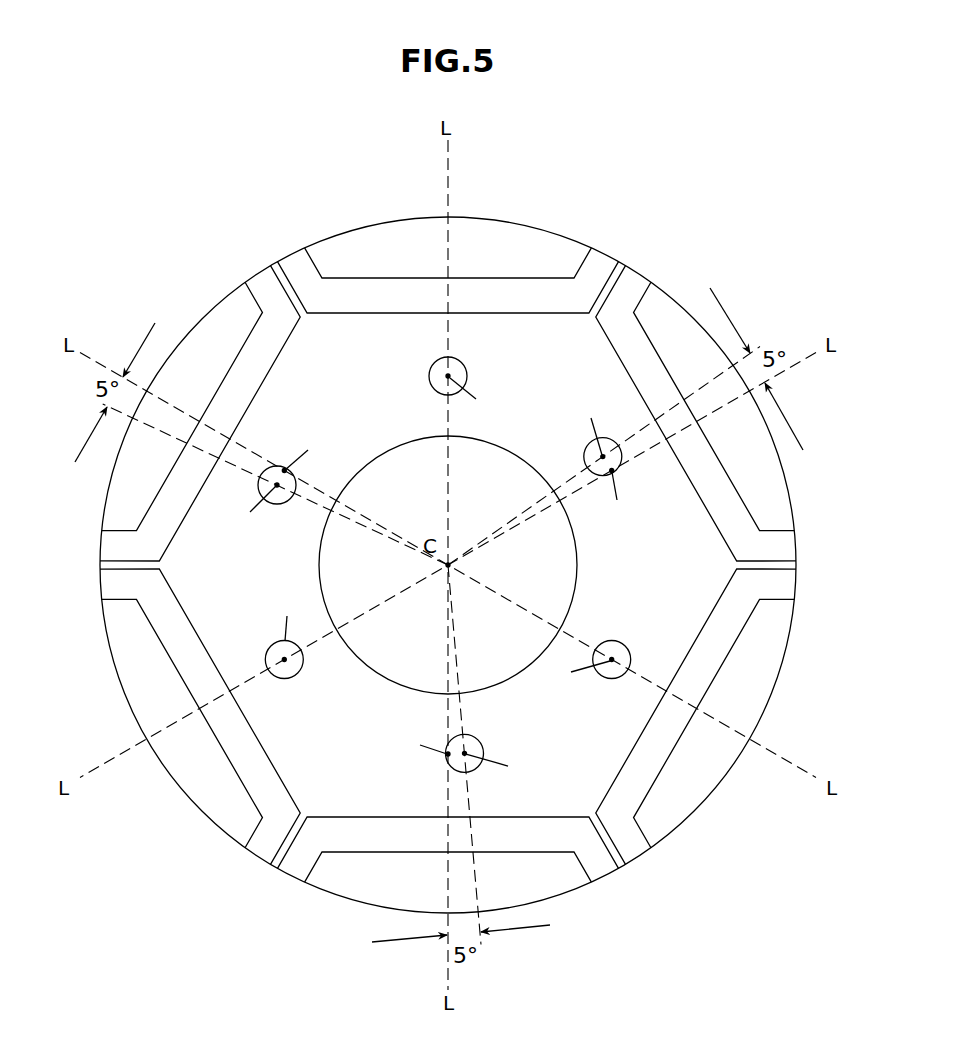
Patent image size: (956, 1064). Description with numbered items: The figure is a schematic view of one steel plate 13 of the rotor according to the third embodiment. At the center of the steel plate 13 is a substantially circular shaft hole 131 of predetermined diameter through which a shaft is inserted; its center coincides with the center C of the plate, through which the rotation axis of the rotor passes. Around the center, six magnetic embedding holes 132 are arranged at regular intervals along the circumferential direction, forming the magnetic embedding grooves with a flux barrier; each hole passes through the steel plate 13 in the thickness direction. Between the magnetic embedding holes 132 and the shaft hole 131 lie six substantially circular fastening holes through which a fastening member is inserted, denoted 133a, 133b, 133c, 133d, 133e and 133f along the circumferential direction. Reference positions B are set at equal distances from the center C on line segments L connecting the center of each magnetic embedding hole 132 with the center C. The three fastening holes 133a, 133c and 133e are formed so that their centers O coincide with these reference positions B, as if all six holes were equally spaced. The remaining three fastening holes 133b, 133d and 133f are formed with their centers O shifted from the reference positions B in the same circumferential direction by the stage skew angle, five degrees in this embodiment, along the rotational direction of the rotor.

The steel plate 13 is at (156, 172).
The shaft hole 131 is at (577, 562).
The magnetic embedding hole 132 is at (556, 272).
The fastening hole 133a is at (434, 389).
The fastening hole 133b is at (285, 503).
The fastening hole 133c is at (298, 678).
The fastening hole 133d is at (479, 741).
The fastening hole 133e is at (615, 641).
The fastening hole 133f is at (589, 445).